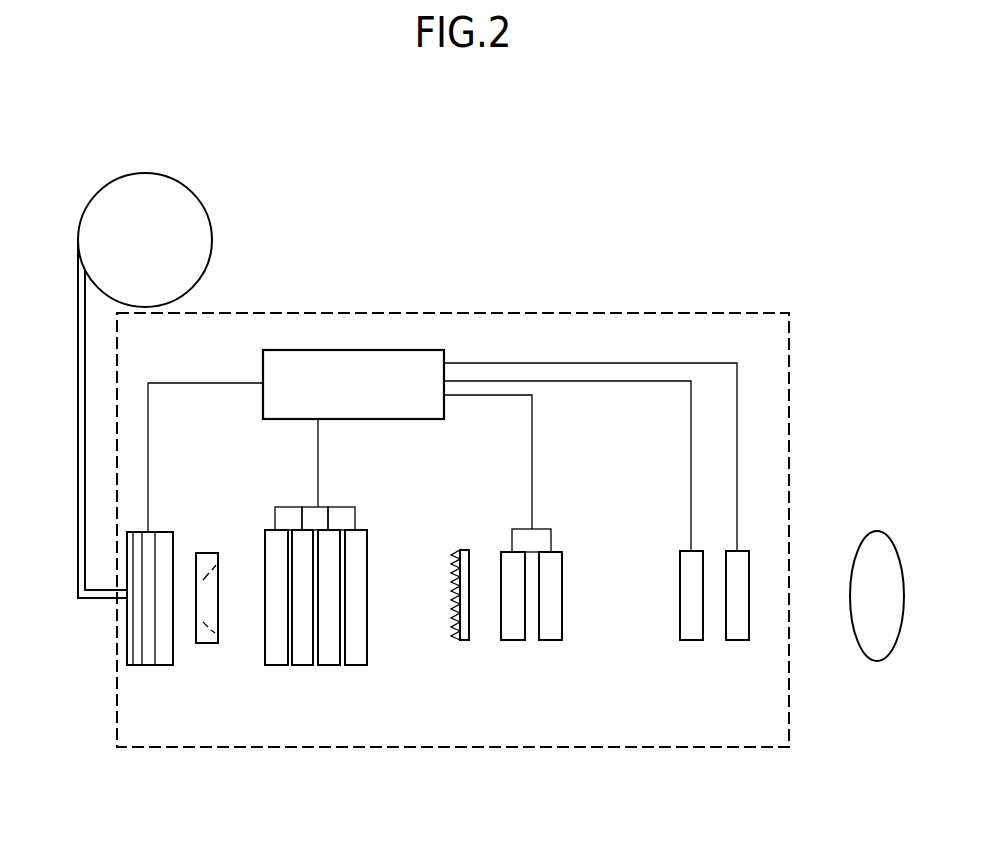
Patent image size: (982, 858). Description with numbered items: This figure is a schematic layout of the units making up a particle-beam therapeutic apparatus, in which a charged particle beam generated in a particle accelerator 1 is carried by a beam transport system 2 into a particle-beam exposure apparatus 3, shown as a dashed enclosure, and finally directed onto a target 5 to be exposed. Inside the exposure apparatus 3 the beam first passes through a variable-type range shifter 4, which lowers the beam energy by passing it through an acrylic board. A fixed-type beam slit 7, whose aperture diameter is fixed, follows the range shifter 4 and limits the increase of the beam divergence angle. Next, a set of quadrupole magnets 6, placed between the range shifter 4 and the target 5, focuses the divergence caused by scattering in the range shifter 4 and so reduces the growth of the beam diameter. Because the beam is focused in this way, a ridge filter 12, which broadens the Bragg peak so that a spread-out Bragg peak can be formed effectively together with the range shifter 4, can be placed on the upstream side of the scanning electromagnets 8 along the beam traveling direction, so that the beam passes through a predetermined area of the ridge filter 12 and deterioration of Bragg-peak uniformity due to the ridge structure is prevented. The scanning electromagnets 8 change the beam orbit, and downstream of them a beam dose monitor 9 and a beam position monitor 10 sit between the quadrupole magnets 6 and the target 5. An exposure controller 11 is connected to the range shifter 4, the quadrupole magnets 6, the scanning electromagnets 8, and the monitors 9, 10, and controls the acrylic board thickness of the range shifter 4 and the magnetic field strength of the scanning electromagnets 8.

The particle accelerator 1 is at (212, 237).
The beam transport system 2 is at (78, 353).
The particle-beam exposure apparatus 3 is at (662, 311).
The variable-type range shifter 4 is at (147, 665).
The target 5 is at (856, 642).
The set of quadrupole magnets 6 is at (367, 672).
The fixed-type beam slit 7 is at (210, 643).
The scanning electromagnets 8 is at (501, 650).
The beam dose monitor 9 is at (692, 640).
The beam position monitor 10 is at (738, 640).
The exposure controller 11 is at (378, 350).
The ridge filter 12 is at (465, 640).